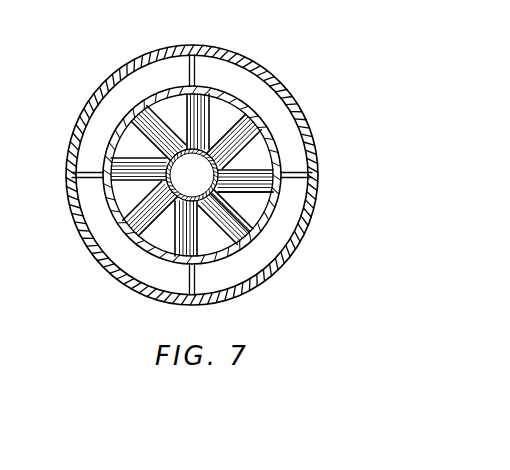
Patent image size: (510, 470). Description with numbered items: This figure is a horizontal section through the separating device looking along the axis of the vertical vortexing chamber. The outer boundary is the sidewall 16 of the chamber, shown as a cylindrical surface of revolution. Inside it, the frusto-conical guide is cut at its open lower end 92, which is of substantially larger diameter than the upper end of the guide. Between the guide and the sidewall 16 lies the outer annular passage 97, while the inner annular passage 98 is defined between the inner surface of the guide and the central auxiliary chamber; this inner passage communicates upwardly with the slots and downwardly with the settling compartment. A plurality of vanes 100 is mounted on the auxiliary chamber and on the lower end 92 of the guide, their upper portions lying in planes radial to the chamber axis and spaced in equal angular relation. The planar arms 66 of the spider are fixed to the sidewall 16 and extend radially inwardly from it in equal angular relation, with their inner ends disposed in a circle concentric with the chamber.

The sidewall 16 is at (311, 132).
The outer annular passage 97 is at (157, 70).
The open lower end 92 is at (222, 88).
The planar arms 66 is at (85, 176).
The inner annular passage 98 is at (132, 140).
The vanes 100 is at (224, 240).